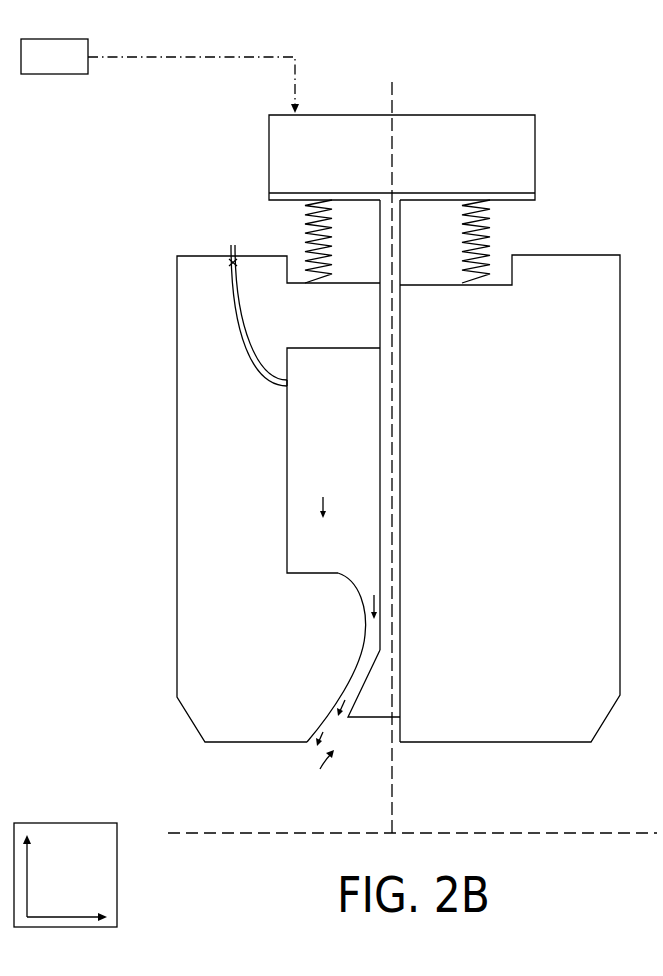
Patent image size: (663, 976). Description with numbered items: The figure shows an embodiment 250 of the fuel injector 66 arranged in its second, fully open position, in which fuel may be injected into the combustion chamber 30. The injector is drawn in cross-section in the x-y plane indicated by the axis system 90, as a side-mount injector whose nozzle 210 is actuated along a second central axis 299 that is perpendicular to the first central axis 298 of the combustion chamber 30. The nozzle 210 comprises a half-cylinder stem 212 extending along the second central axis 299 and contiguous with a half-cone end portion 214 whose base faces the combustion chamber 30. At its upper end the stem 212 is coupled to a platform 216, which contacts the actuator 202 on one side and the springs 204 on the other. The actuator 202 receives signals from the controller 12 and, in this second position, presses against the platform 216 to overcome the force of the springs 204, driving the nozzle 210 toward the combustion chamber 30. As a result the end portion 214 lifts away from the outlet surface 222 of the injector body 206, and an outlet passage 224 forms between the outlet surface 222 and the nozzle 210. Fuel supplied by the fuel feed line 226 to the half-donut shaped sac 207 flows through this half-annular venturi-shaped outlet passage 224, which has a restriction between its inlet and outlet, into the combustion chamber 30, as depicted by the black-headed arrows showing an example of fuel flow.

The controller 12 is at (65, 68).
The actuator 202 is at (347, 171).
The springs 204 is at (306, 230).
The platform 216 is at (533, 200).
The injector body 206 is at (177, 476).
The sac 207 is at (347, 448).
The nozzle 210 is at (364, 547).
The stem 212 is at (380, 393).
The end portion 214 is at (350, 717).
The outlet surface 222 is at (333, 712).
The outlet passage 224 is at (312, 765).
The fuel feed line 226 is at (268, 380).
The embodiment 250 is at (553, 60).
The fuel injector 66 is at (601, 110).
The first central axis 298 is at (222, 833).
The second central axis 299 is at (393, 775).
The combustion chamber 30 is at (317, 825).
The coordinate system 90 is at (40, 823).